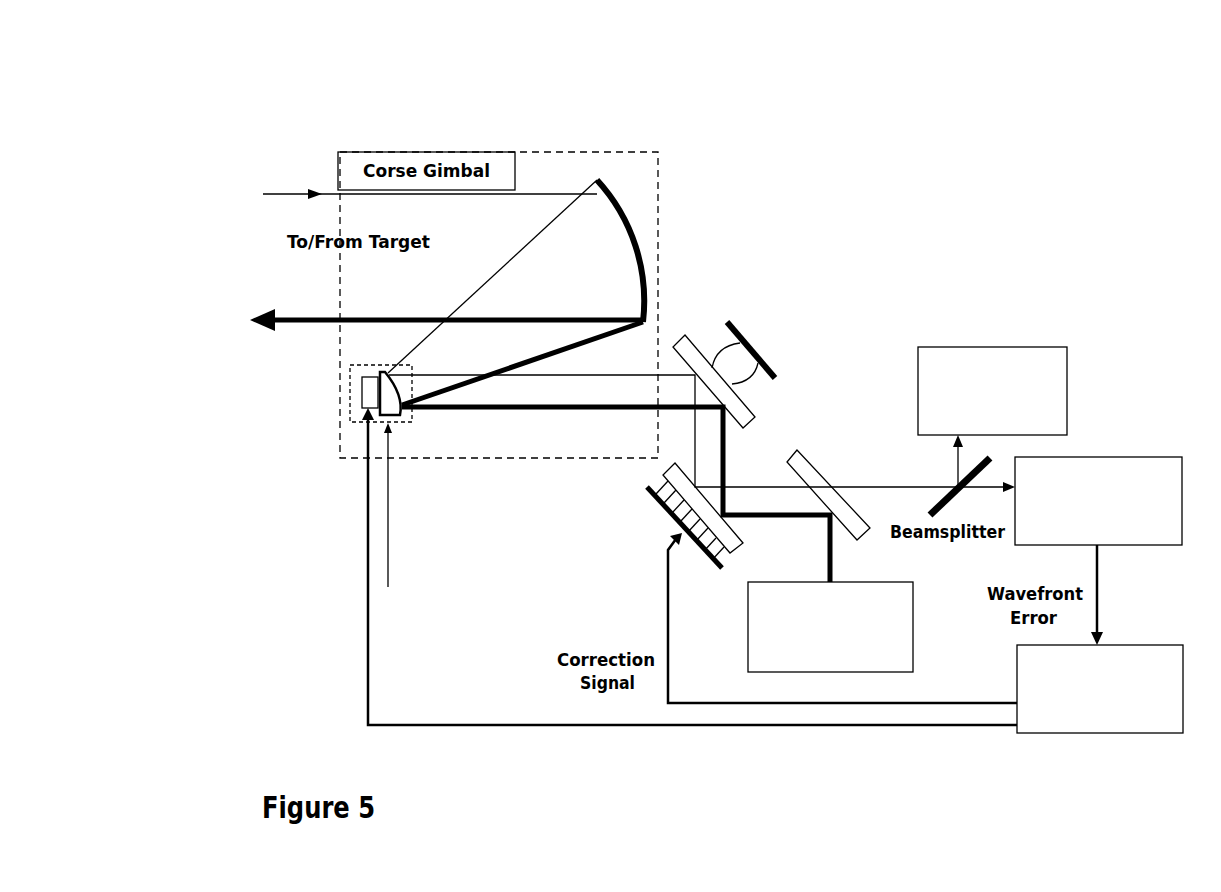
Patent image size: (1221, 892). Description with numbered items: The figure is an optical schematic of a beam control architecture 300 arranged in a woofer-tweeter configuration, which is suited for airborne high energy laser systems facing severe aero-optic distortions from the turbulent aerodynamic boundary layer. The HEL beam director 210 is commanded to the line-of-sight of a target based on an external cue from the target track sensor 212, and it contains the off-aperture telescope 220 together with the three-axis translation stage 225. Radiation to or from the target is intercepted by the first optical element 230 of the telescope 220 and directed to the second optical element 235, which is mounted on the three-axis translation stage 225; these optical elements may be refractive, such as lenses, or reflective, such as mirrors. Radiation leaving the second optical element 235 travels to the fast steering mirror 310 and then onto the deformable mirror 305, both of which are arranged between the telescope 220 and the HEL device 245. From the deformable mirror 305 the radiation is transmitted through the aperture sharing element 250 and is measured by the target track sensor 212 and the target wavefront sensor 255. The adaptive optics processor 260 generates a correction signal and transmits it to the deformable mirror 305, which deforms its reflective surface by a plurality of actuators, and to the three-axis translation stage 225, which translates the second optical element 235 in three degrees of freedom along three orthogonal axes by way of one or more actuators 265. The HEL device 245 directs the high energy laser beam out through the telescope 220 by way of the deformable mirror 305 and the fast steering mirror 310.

The beam control architecture 300 is at (1096, 85).
The HEL beam director 210 is at (664, 147).
The off-aperture telescope 220 is at (490, 484).
The first optical element 230 is at (647, 258).
The 3-axis translation stage 225 is at (352, 395).
The actuators 265 is at (363, 408).
The second optical element 235 is at (459, 506).
The fast steering mirror 310 is at (771, 369).
The deformable mirror 305 is at (653, 516).
The aperture sharing element 250 is at (847, 465).
The target track sensor 212 is at (992, 391).
The target wavefront sensor 255 is at (1098, 501).
The HEL device 245 is at (830, 627).
The adaptive optics processor 260 is at (1100, 689).